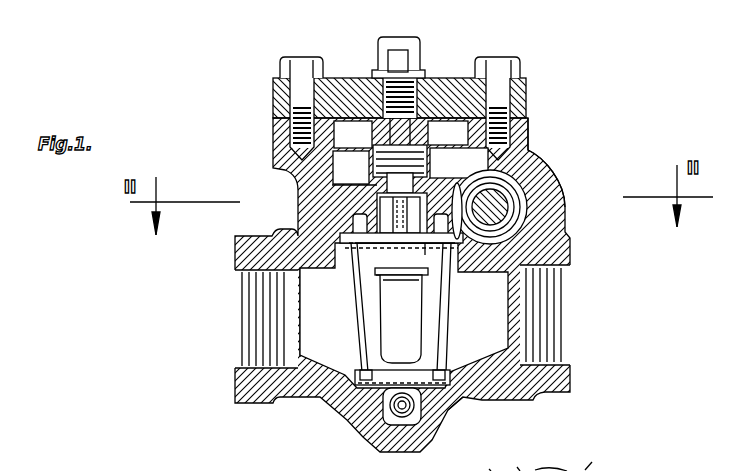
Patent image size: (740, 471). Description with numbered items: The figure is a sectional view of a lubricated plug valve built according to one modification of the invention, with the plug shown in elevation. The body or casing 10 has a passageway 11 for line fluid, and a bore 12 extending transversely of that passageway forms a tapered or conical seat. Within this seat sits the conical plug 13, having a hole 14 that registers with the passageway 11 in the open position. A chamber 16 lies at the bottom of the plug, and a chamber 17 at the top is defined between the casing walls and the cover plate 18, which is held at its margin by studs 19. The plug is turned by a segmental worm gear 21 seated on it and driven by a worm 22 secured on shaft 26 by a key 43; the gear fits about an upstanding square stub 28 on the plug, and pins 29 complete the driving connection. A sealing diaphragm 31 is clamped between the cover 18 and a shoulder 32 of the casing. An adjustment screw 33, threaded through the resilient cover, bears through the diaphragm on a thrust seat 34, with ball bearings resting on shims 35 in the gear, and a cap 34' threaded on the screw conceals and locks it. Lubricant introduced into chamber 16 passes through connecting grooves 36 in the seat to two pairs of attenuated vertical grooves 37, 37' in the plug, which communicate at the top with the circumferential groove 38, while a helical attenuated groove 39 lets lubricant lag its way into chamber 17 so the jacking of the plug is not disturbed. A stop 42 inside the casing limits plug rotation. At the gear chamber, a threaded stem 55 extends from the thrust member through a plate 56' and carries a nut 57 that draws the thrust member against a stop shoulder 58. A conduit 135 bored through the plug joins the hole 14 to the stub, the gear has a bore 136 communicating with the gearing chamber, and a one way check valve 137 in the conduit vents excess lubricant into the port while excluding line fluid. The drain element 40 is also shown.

The body or casing 10 is at (572, 250).
The passageway 11 is at (329, 303).
The bore forming tapered or conical seat 12 is at (321, 312).
The conical plug 13 is at (440, 350).
The hole 14 is at (392, 353).
The chamber 16 is at (415, 402).
The chamber 17 is at (360, 171).
The cover plate 18 is at (338, 78).
The studs 19 is at (290, 68).
The segmental worm gear 21 is at (332, 200).
The worm 22 is at (527, 222).
The shaft 26 is at (522, 190).
The square stub 28 is at (353, 215).
The pins 29 is at (340, 236).
The sealing diaphragm 31 is at (448, 133).
The shoulder 32 is at (530, 128).
The adjustment screw 33 is at (417, 98).
The thrust seat 34 is at (356, 134).
The cap 34' is at (406, 62).
The shims 35 is at (430, 161).
The connecting grooves 36 is at (470, 401).
The vertical lubricant grooves 37 is at (420, 307).
The vertical lubricant grooves 37' is at (333, 297).
The circumferential groove 38 is at (401, 279).
The helical attenuated groove 39 is at (458, 250).
The drain outlet 40 is at (432, 445).
The stop 42 is at (332, 185).
The key 43 is at (505, 207).
The threaded stem 55 is at (516, 459).
The plate 56' is at (599, 456).
The nut 57 is at (533, 468).
The stop shoulder 58 is at (489, 462).
The conduit 135 is at (402, 284).
The bore 136 is at (400, 183).
The one way check valve 137 is at (428, 254).